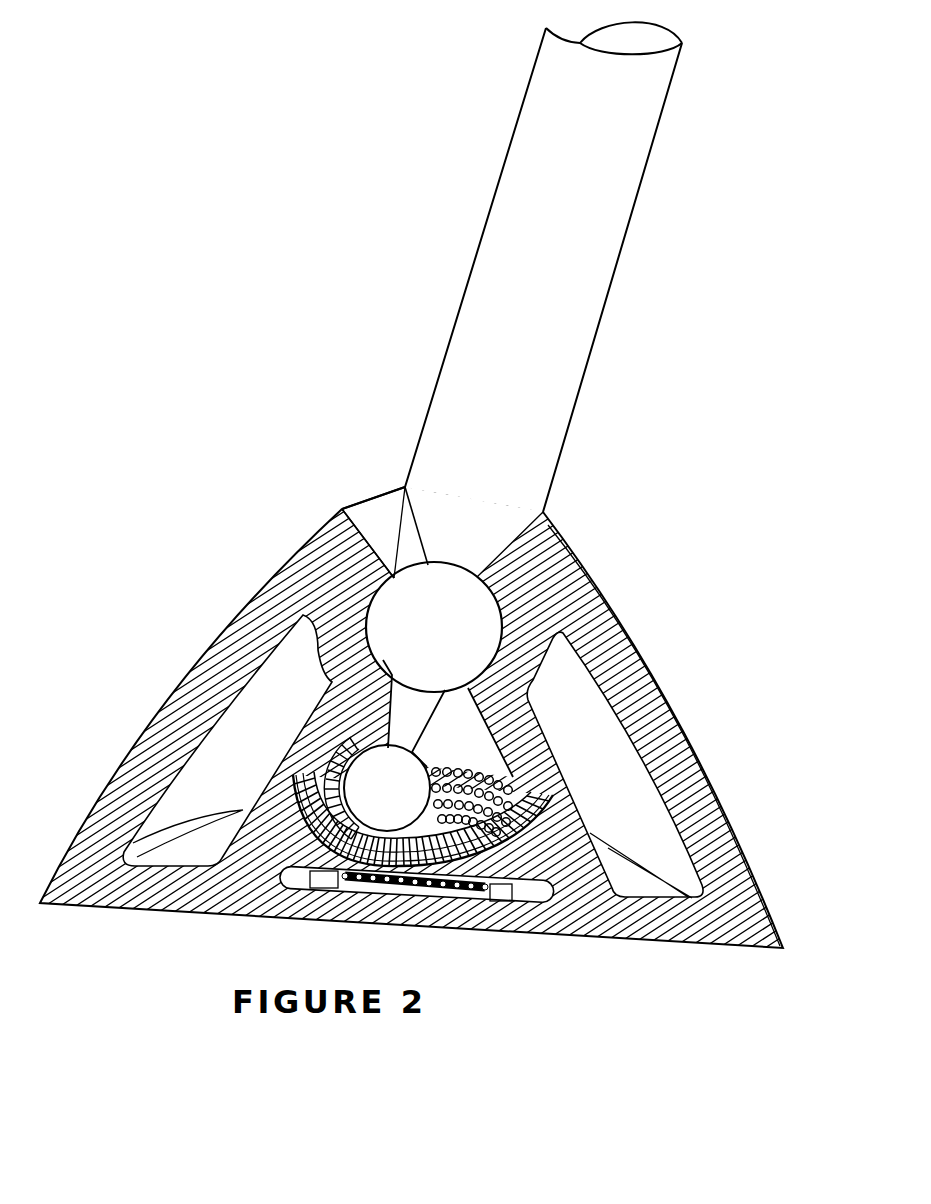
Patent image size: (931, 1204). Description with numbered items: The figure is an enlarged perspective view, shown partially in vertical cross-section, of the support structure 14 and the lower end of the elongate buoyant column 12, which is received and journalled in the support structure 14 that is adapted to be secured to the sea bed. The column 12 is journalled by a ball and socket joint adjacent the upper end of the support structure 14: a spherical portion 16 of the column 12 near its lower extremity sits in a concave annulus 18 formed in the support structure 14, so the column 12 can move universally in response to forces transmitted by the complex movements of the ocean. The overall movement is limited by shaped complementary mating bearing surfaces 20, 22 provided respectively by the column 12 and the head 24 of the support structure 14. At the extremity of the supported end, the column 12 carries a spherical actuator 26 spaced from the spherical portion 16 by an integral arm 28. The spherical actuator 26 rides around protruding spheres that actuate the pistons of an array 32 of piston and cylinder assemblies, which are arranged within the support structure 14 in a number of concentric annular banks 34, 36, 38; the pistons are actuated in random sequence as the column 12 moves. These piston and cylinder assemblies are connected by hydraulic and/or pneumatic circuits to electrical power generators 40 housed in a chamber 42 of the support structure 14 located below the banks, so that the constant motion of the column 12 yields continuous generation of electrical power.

The elongate buoyant column 12 is at (506, 325).
The support structure 14 is at (295, 577).
The spherical portion 16 is at (426, 638).
The concave annulus 18 is at (510, 580).
The bearing surface 20 is at (383, 498).
The bearing surface 22 is at (323, 528).
The head 24 is at (352, 500).
The spherical actuator 26 is at (373, 802).
The integral arm 28 is at (394, 727).
The array of piston and cylinder assemblies 32 is at (520, 760).
The concentric annular bank 34 is at (530, 785).
The concentric annular bank 36 is at (543, 828).
The concentric annular bank 38 is at (543, 853).
The electrical power generator 40 is at (443, 888).
The chamber 42 is at (533, 892).